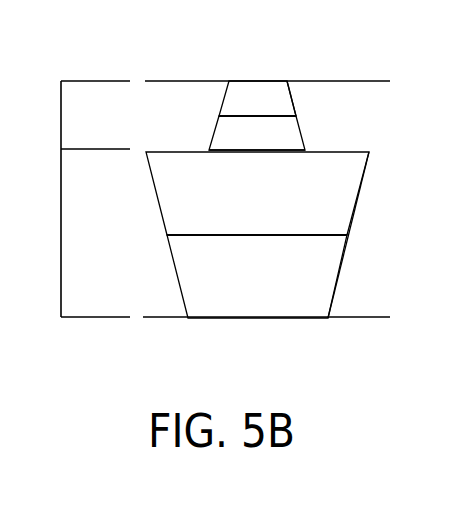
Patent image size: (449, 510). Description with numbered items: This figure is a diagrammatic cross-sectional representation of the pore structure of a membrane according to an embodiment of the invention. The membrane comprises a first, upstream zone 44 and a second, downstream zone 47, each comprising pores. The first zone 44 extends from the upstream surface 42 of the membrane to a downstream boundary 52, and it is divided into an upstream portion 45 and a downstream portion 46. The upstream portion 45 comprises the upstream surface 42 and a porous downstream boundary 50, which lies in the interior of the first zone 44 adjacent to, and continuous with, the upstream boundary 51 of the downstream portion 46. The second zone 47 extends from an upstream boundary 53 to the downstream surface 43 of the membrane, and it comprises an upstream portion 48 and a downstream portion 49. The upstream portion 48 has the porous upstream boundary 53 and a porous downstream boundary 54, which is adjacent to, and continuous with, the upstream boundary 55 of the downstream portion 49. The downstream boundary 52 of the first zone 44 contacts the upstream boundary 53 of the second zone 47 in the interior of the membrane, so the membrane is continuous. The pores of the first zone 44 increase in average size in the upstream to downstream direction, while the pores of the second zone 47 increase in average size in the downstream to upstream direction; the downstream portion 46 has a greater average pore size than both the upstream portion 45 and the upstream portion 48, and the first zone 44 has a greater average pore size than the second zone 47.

The upstream surface 42 is at (169, 318).
The downstream surface 43 is at (311, 80).
The first, upstream zone 44 is at (61, 243).
The upstream portion of the first zone 45 is at (272, 284).
The downstream portion of the first zone 46 is at (270, 200).
The second, downstream zone 47 is at (61, 119).
The upstream portion of the second zone 48 is at (267, 145).
The downstream portion of the second zone 49 is at (267, 111).
The downstream boundary of the upstream portion of the first zone 50 is at (330, 237).
The upstream boundary of the downstream portion of the first zone 51 is at (323, 230).
The downstream boundary of the first zone 52 is at (353, 153).
The upstream boundary of the second zone 53 is at (292, 149).
The downstream boundary of the upstream portion of the second zone 54 is at (290, 117).
The upstream boundary of the downstream portion of the second zone 55 is at (278, 111).